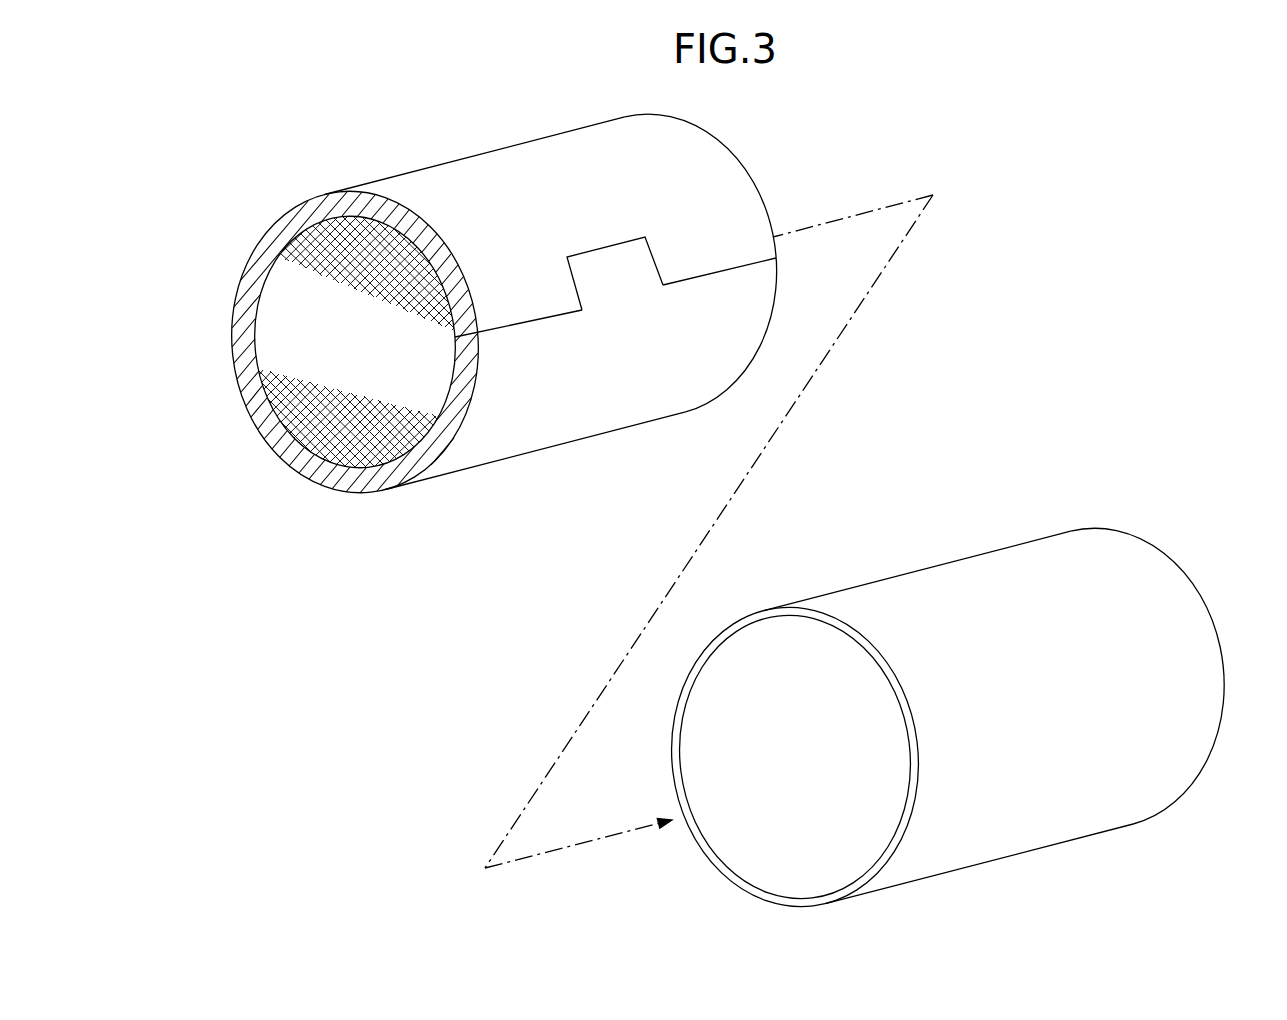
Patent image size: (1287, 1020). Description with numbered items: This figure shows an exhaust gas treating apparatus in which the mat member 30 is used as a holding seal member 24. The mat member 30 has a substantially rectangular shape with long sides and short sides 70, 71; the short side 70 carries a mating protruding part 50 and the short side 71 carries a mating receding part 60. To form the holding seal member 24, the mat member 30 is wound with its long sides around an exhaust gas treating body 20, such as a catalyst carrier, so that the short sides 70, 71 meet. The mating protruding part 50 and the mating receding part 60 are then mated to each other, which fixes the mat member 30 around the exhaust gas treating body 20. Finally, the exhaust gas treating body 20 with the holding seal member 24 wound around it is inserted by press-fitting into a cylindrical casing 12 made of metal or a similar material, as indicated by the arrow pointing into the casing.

The cylindrical casing 12 is at (1035, 830).
The exhaust gas treating body 20 is at (273, 331).
The holding seal member 24 is at (528, 290).
The mat member 30 is at (528, 290).
The mating protruding part 50 is at (615, 378).
The mating receding part 60 is at (620, 275).
The short side 70 is at (667, 235).
The short side 71 is at (718, 270).